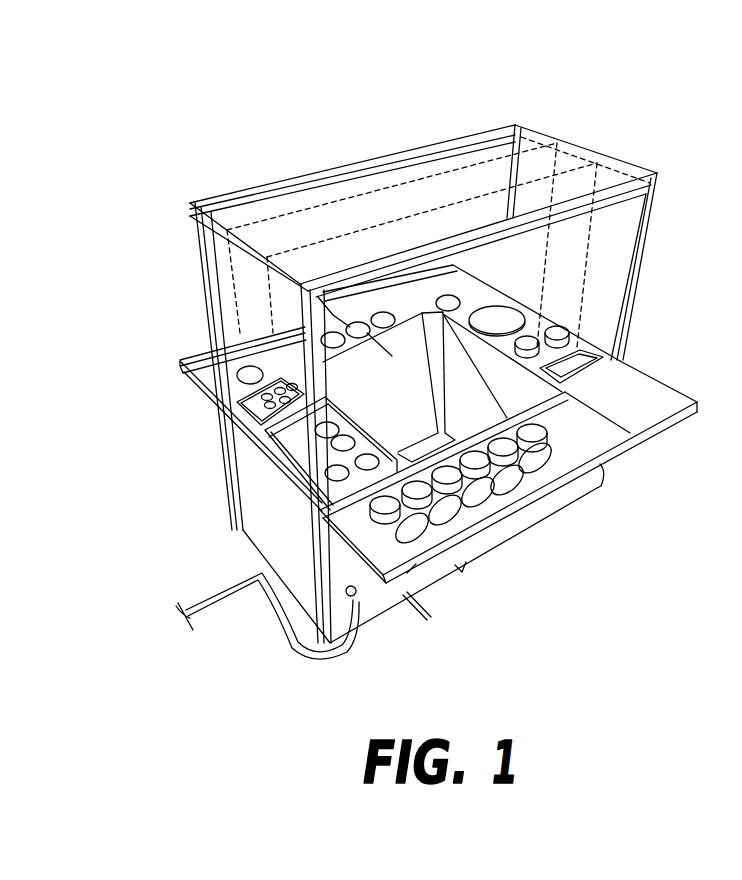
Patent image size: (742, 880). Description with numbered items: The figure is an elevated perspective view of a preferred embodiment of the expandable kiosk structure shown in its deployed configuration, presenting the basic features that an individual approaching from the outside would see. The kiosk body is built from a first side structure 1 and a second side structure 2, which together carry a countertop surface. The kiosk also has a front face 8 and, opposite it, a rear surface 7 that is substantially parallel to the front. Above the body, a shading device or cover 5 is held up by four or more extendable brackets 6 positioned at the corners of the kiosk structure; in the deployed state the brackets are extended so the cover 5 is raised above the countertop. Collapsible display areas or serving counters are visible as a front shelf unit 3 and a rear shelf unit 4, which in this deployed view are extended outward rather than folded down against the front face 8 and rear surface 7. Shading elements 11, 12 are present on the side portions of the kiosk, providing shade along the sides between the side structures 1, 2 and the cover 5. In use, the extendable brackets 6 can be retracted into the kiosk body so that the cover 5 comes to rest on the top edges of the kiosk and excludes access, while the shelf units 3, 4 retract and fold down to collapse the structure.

The first side structure 1 is at (520, 393).
The second side structure 2 is at (257, 530).
The front shelf unit 3 is at (653, 390).
The rear shelf unit 4 is at (182, 365).
The shading device or cover 5 is at (528, 188).
The extendable brackets 6 is at (290, 338).
The rear surface 7 is at (460, 572).
The front face 8 is at (293, 585).
The shading element 11 is at (247, 290).
The shading element 12 is at (608, 223).